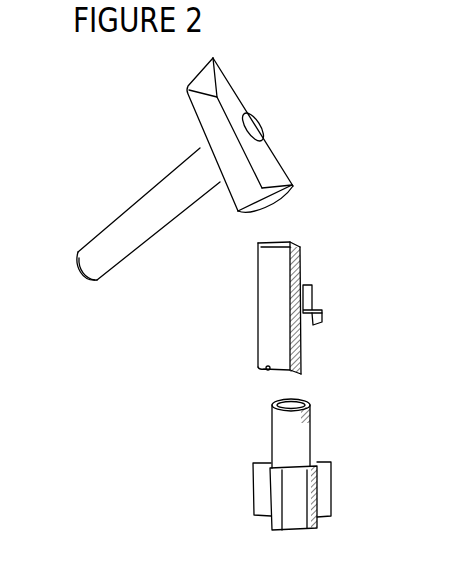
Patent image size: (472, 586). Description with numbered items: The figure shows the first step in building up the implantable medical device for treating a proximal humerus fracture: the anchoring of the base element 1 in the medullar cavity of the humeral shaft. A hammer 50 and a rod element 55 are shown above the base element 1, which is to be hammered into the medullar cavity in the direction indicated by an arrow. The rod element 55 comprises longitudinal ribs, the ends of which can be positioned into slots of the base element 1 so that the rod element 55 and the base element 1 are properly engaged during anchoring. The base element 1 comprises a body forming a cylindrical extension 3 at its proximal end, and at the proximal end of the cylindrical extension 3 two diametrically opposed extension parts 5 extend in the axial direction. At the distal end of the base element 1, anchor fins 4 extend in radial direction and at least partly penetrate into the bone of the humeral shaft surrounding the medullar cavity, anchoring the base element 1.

The base element 1 is at (250, 437).
The cylindrical extension 3 is at (293, 450).
The anchor fins 4 is at (278, 503).
The extension parts 5 is at (278, 417).
The hammer 50 is at (177, 192).
The rod element 55 is at (285, 265).